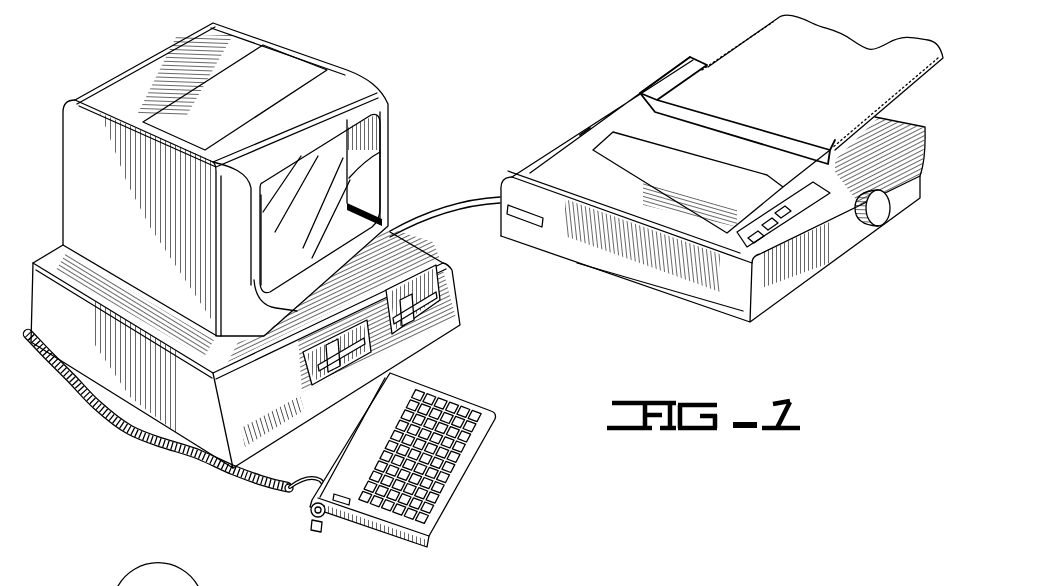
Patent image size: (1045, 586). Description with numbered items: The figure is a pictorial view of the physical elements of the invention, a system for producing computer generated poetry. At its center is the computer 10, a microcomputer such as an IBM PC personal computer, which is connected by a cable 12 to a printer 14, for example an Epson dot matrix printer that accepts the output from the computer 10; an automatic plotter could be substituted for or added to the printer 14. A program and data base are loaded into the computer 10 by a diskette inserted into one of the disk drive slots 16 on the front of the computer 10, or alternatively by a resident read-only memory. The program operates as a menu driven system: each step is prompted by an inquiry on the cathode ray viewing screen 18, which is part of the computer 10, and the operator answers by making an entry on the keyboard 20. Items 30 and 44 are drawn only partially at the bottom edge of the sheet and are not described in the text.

The computer 10 is at (78, 93).
The cable 12 is at (458, 200).
The printer 14 is at (546, 150).
The disk drive slots 16 is at (436, 291).
The cathode ray viewing screen 18 is at (344, 183).
The keyboard 20 is at (472, 393).
The component 30 is at (219, 576).
The component 44 is at (808, 575).